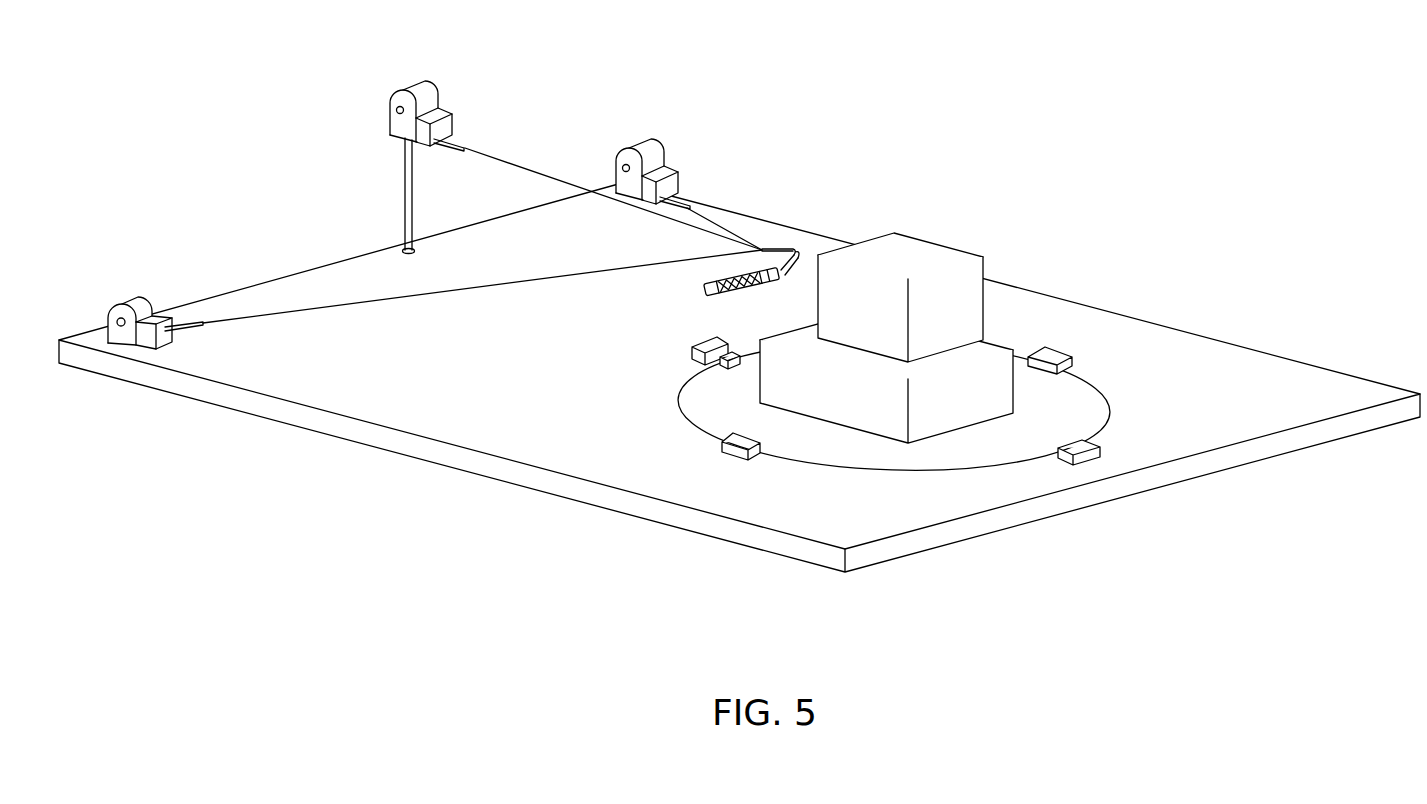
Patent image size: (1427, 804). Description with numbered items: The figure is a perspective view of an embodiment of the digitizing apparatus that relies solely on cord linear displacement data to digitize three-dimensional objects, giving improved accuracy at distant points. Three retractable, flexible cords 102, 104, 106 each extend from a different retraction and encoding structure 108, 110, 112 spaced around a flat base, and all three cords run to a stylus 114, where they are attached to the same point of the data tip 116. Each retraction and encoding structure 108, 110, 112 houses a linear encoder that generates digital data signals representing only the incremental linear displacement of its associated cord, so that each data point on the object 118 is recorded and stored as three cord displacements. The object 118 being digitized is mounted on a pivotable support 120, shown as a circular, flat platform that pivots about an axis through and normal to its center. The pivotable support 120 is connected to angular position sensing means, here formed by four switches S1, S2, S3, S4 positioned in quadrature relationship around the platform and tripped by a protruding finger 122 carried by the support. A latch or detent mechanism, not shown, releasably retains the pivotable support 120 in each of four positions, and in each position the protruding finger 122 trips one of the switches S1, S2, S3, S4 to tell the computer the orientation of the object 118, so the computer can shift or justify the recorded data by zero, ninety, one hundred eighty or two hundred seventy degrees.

The retractable flexible cord 102 is at (733, 233).
The retractable flexible cord 104 is at (508, 160).
The retractable flexible cord 106 is at (222, 323).
The retraction and encoding structure 108 is at (739, 330).
The retraction and encoding structure 110 is at (390, 120).
The retraction and encoding structure 112 is at (128, 293).
The stylus 114 is at (705, 290).
The data tip 116 is at (807, 250).
The object 118 is at (925, 250).
The pivotable support 120 is at (917, 458).
The protruding finger 122 is at (723, 365).
The switch S1 is at (740, 457).
The switch S2 is at (692, 355).
The switch S3 is at (1090, 463).
The switch S4 is at (1055, 347).